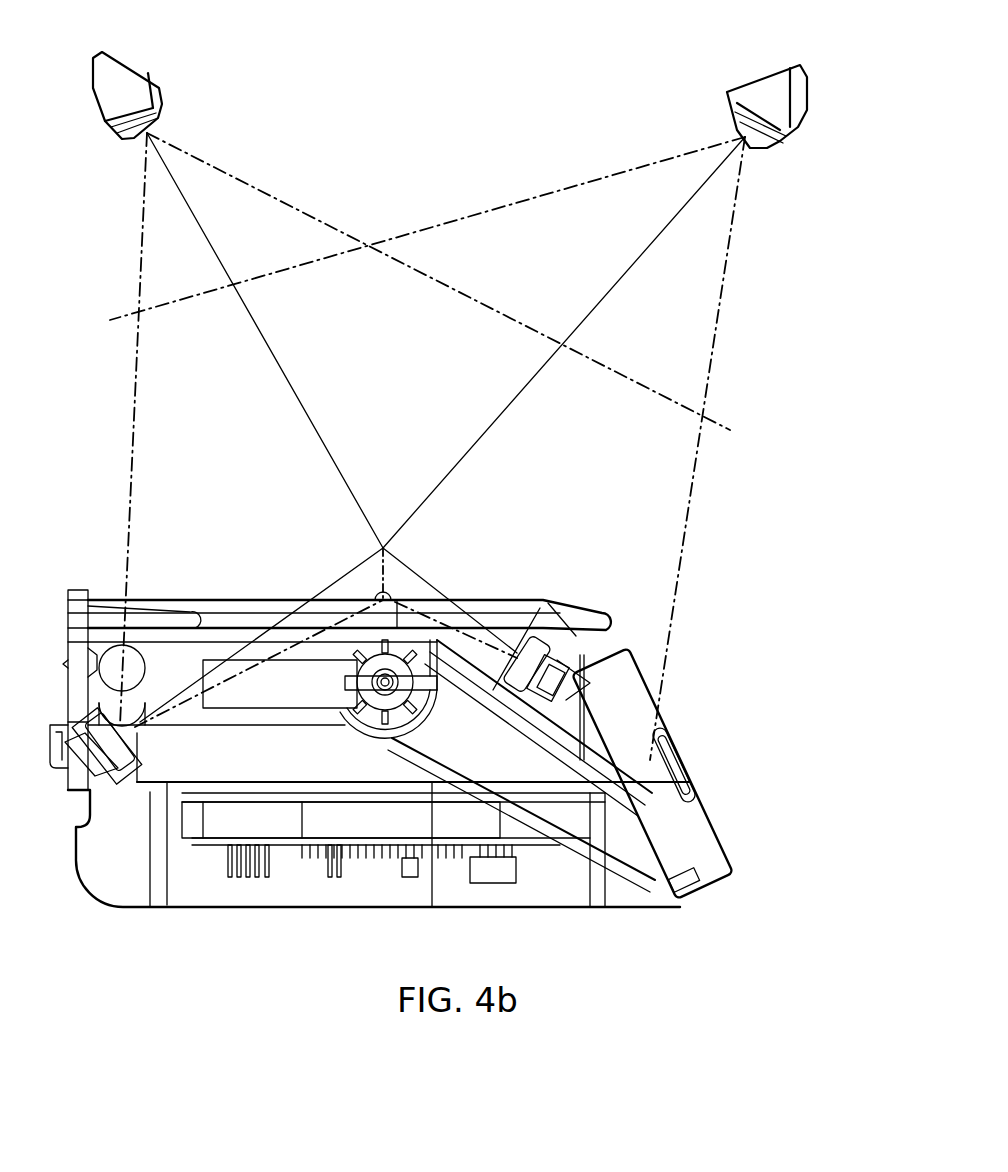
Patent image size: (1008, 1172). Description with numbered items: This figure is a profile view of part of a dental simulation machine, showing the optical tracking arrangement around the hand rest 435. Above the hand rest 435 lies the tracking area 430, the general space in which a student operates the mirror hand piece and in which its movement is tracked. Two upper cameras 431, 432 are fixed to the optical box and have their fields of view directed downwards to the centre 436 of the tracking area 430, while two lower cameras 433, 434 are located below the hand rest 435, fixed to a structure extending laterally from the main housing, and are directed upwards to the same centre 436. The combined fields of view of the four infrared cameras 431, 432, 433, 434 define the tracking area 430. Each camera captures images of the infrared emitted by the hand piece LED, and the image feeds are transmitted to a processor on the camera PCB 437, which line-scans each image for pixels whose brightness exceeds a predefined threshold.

The tracking area 430 is at (413, 393).
The upper camera 431 is at (162, 91).
The upper camera 432 is at (807, 100).
The lower camera 433 is at (137, 750).
The lower camera 434 is at (560, 663).
The hand rest 435 is at (602, 609).
The centre of tracking area 436 is at (385, 547).
The camera PCB 437 is at (553, 823).